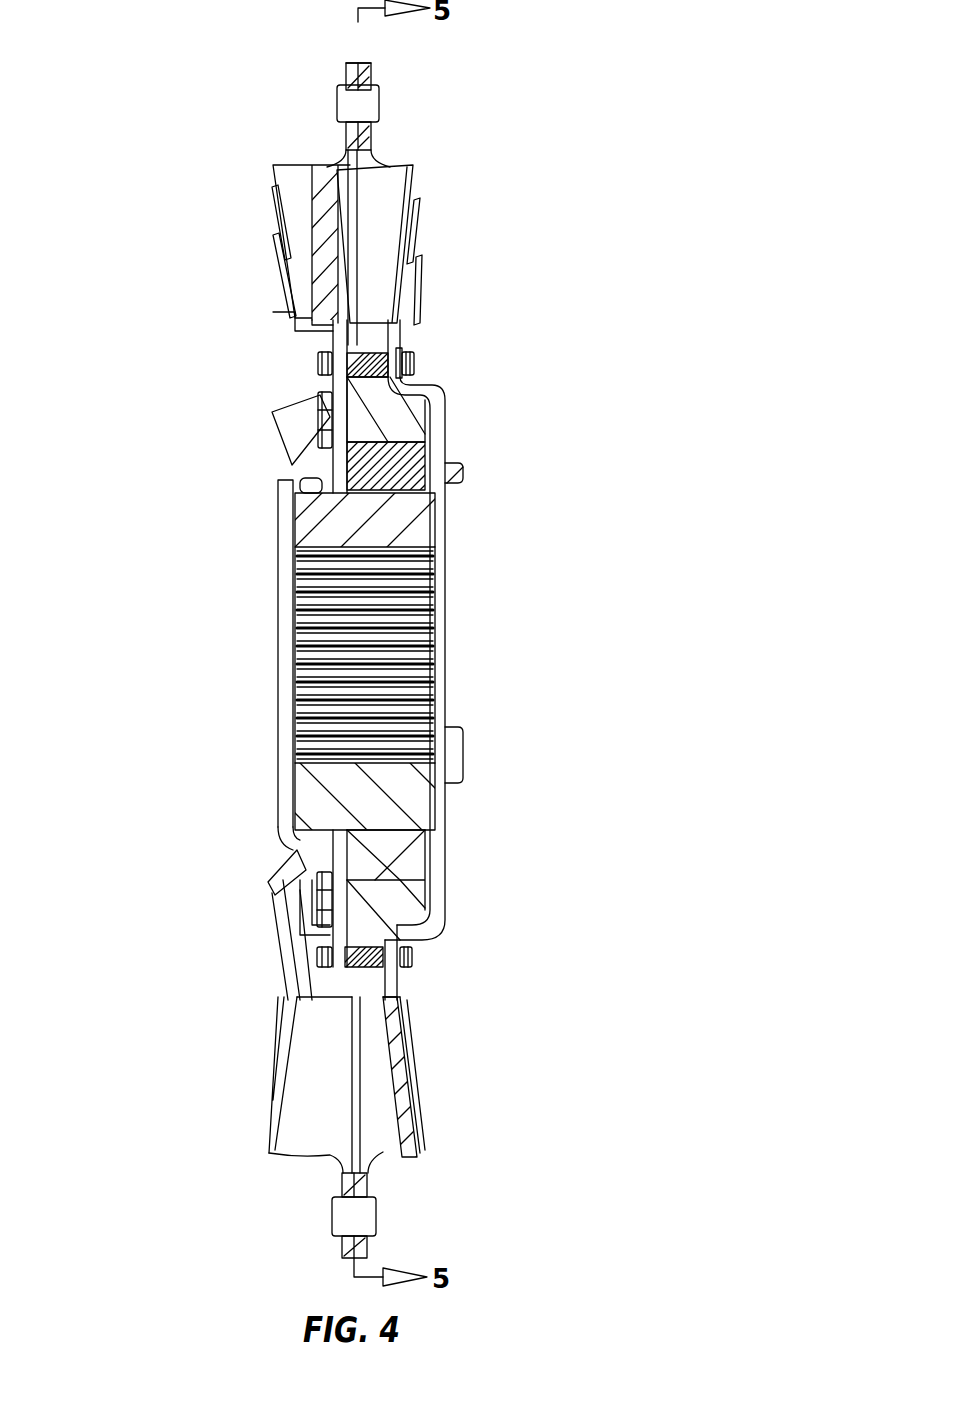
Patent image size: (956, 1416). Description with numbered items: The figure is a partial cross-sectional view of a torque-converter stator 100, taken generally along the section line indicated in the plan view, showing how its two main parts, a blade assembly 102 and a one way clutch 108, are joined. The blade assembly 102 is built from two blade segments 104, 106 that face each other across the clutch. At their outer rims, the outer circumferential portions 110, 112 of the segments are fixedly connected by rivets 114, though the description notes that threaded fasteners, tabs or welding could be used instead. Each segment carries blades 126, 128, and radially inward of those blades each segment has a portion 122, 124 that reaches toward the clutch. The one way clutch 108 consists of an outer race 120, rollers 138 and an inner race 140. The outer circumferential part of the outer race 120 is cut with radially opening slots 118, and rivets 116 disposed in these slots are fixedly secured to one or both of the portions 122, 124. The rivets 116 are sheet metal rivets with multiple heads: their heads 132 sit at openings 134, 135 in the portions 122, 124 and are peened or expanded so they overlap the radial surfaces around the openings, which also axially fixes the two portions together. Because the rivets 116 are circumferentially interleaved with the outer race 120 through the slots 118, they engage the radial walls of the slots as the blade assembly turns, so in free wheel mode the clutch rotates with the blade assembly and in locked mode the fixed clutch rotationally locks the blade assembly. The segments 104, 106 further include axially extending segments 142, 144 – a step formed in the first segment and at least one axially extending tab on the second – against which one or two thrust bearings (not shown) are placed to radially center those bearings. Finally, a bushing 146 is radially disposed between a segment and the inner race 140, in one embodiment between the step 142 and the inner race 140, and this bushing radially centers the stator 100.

The stator 100 is at (630, 120).
The blade assembly 102 is at (258, 280).
The blade segment 104 is at (330, 141).
The blade segment 106 is at (390, 142).
The one way clutch 108 is at (488, 566).
The outer circumferential portion 110 is at (348, 63).
The outer circumferential portion 112 is at (362, 63).
The rivet 114 is at (337, 100).
The rivet 116 is at (432, 362).
The radially opening slot 118 is at (362, 398).
The outer race 120 is at (388, 423).
The portion 122 is at (320, 347).
The portion 124 is at (398, 342).
The blade 126 is at (292, 225).
The blade 128 is at (418, 175).
The head 132 is at (320, 365).
The opening 134 is at (330, 382).
The opening 135 is at (402, 352).
The roller 138 is at (360, 465).
The inner race 140 is at (315, 527).
The axially extending segment 142 is at (305, 856).
The axially extending segment 144 is at (462, 470).
The bushing 146 is at (320, 486).